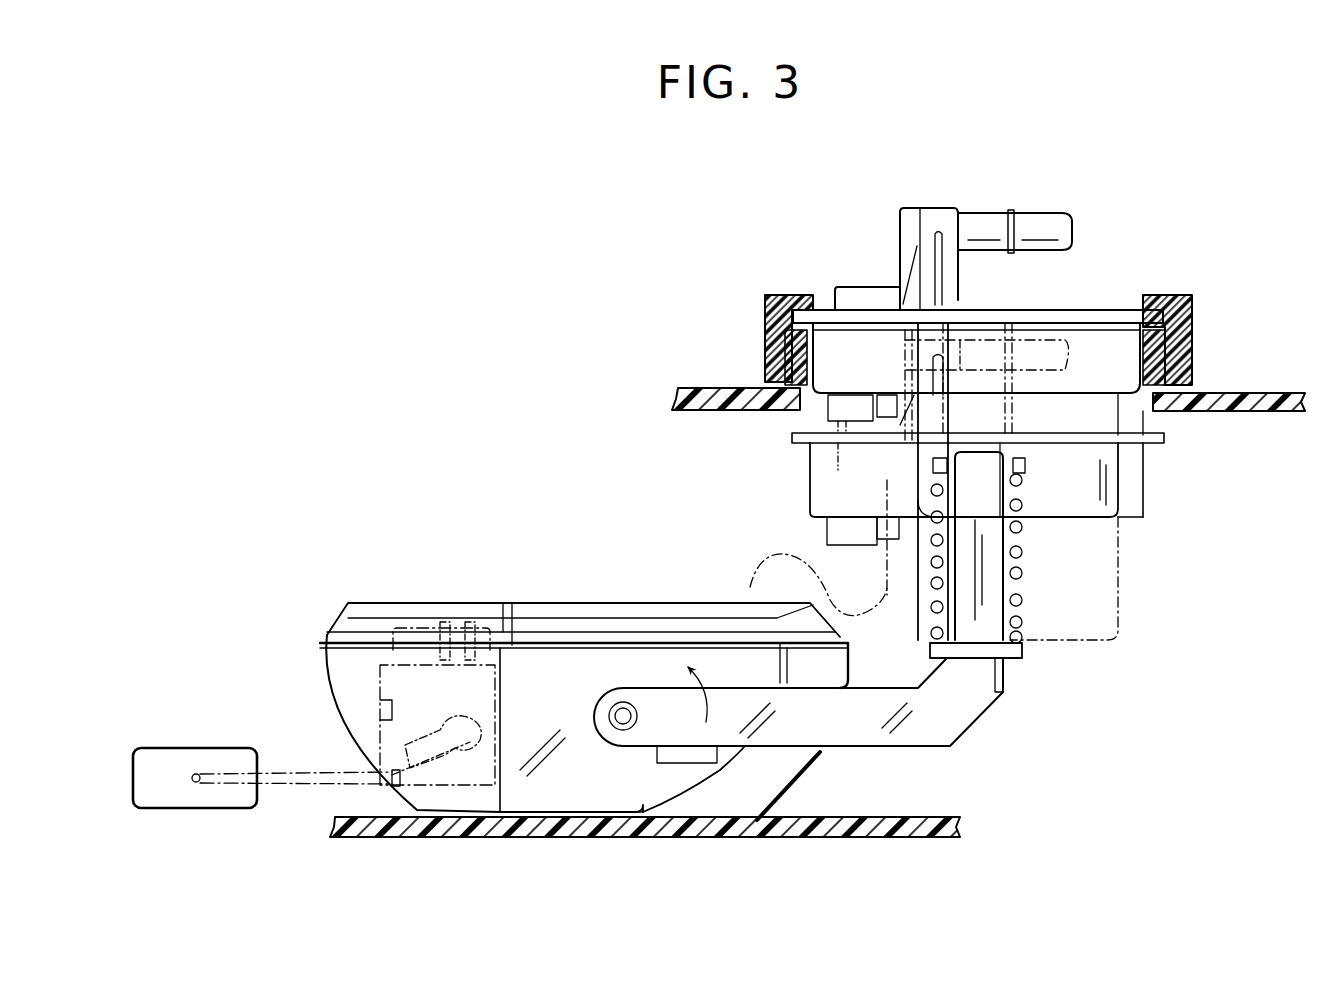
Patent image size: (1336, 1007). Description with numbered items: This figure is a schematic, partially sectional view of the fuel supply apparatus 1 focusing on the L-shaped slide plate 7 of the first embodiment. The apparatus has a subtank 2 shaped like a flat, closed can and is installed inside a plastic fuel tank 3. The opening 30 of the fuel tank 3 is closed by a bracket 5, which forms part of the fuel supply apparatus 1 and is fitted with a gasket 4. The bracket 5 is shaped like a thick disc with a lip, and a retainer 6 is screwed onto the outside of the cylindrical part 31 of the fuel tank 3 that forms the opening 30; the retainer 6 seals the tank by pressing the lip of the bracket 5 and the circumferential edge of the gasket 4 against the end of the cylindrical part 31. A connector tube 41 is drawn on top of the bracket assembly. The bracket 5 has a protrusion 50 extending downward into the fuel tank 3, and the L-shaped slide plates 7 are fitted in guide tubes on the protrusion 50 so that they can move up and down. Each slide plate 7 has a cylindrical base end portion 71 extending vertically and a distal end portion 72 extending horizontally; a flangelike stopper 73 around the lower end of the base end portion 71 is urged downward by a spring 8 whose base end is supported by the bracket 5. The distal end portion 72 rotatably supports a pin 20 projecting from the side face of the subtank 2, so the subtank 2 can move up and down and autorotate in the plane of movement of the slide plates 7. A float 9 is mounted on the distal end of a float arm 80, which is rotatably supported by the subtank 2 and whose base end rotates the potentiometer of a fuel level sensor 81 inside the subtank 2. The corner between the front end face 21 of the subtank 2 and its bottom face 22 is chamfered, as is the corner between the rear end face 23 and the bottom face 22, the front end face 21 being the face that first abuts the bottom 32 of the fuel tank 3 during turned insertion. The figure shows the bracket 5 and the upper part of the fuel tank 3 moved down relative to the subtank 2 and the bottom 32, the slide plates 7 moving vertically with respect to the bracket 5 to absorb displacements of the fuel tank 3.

The fuel supply apparatus 1 is at (888, 798).
The subtank 2 is at (535, 680).
The fuel tank 3 is at (1283, 400).
The gasket 4 is at (1140, 368).
The bracket 5 is at (857, 345).
The retainer 6 is at (1182, 325).
The L-shaped slide plate 7 is at (940, 735).
The spring 8 is at (1022, 572).
The float 9 is at (180, 795).
The pin 20 is at (620, 710).
The front end face 21 is at (342, 728).
The bottom face 22 is at (590, 815).
The rear end face 23 is at (805, 760).
The opening 30 is at (1140, 412).
The cylindrical part 31 is at (1165, 355).
The bottom 32 is at (565, 827).
The connector tube 41 is at (1040, 228).
The protrusion 50 is at (1080, 492).
The base end portion 71 is at (990, 655).
The distal end portion 72 is at (675, 712).
The stopper 73 is at (978, 680).
The float arm 80 is at (280, 790).
The fuel level sensor 81 is at (405, 690).